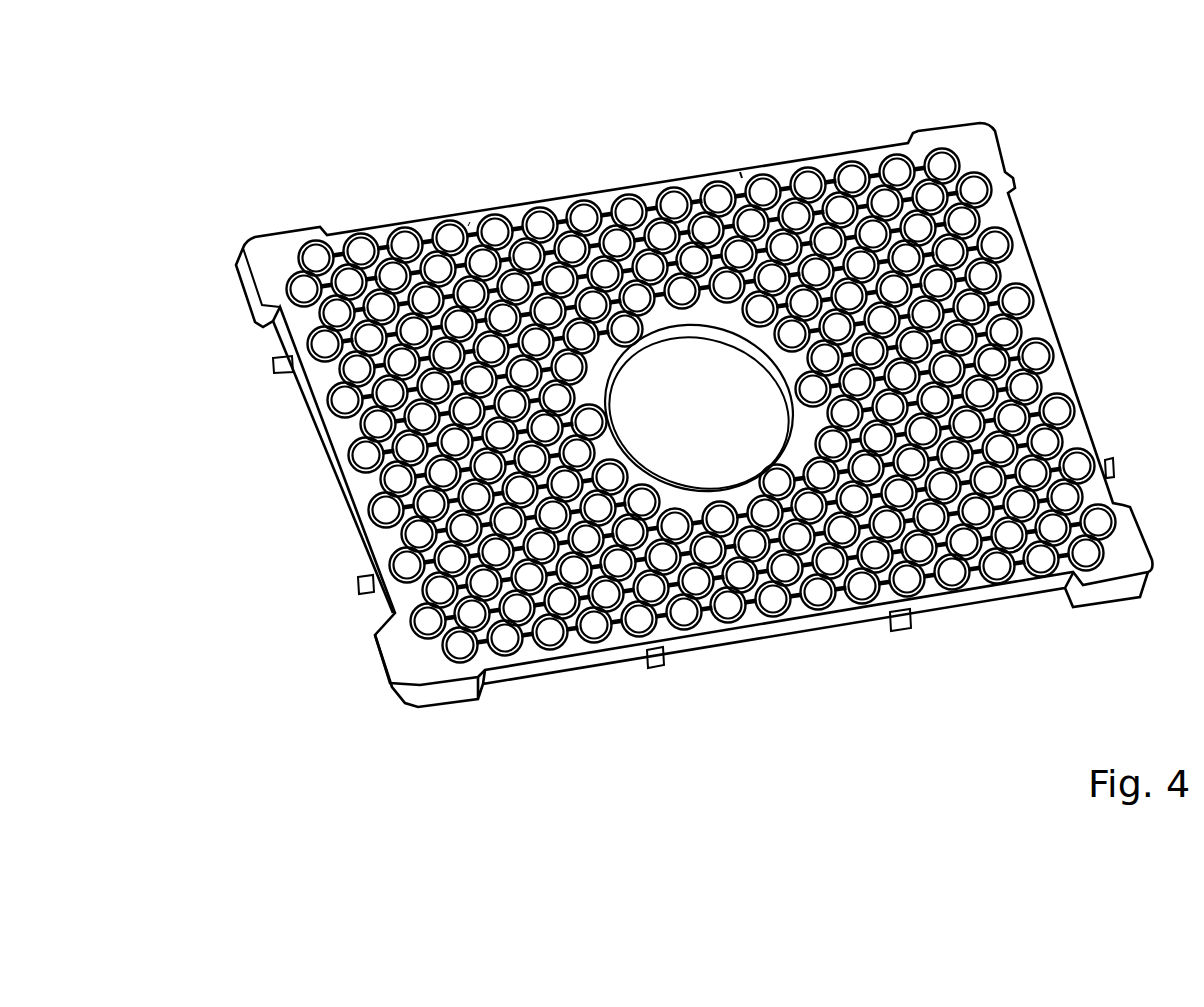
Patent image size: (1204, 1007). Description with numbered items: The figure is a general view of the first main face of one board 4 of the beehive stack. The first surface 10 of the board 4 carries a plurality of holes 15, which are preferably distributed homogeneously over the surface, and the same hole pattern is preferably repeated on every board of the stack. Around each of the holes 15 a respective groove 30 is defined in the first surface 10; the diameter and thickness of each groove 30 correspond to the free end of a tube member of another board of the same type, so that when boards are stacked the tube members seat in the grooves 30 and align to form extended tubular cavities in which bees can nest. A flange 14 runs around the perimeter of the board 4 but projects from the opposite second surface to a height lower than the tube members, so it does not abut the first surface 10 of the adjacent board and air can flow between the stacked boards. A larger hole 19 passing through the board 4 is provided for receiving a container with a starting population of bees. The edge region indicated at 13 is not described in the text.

The board 4 is at (654, 404).
The first surface 10 is at (470, 222).
The rim of top face 13 is at (313, 408).
The flange 14 is at (348, 505).
The holes 15 is at (762, 190).
The hole 19 is at (712, 419).
The groove 30 is at (740, 172).